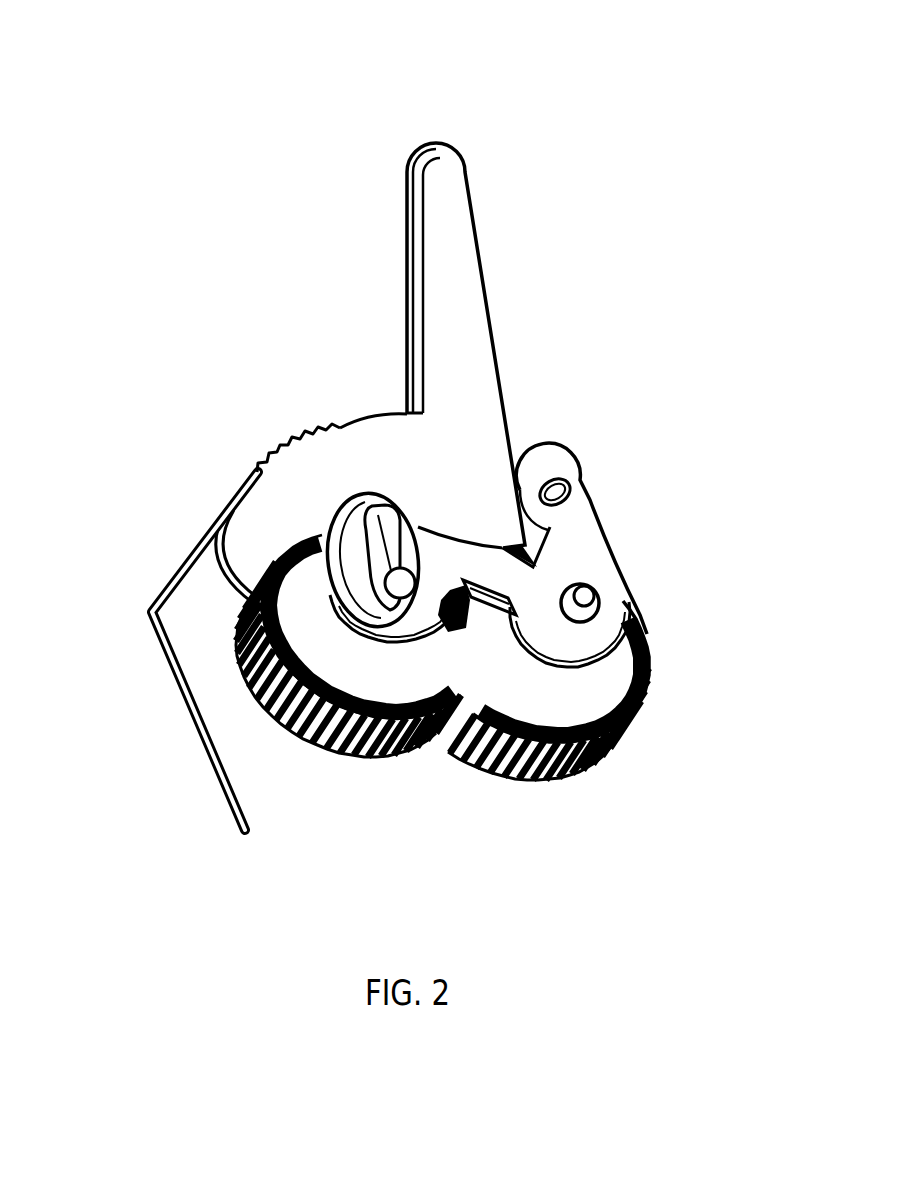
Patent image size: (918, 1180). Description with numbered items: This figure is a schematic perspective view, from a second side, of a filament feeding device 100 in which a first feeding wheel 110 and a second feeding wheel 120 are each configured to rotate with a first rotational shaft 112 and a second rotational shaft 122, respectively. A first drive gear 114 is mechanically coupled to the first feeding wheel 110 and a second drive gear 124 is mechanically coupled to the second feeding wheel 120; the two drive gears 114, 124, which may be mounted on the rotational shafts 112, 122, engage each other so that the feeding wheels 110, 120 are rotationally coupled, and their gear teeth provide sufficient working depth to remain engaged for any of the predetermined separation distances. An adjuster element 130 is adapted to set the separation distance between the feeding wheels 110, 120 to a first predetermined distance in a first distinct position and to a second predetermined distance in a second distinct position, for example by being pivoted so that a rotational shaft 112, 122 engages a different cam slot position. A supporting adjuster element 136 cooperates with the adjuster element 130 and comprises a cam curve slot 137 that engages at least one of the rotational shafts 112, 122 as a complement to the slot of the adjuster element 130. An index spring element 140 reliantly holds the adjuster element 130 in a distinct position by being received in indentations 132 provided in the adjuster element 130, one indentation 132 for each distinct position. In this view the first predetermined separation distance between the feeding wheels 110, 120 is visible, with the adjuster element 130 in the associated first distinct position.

The filament feeding device 100 is at (180, 90).
The first feeding wheel 110 is at (297, 557).
The first rotational shaft 112 is at (373, 497).
The first drive gear 114 is at (370, 763).
The second feeding wheel 120 is at (650, 663).
The second rotational shaft 122 is at (600, 603).
The second drive gear 124 is at (620, 740).
The adjuster element 130 is at (478, 245).
The indentations 132 is at (340, 427).
The supporting adjuster element 136 is at (600, 525).
The cam curve slot 137 is at (400, 527).
The index spring element 140 is at (215, 788).